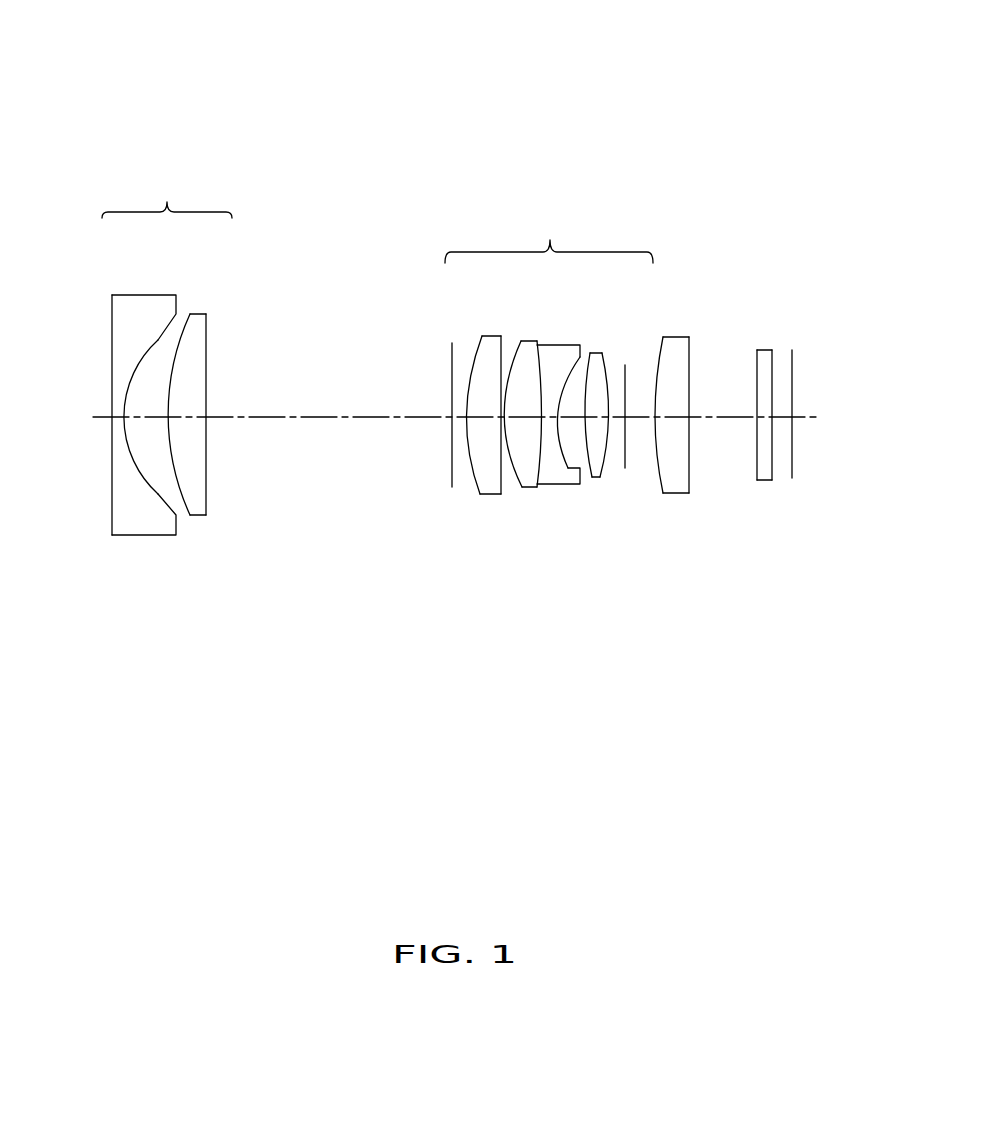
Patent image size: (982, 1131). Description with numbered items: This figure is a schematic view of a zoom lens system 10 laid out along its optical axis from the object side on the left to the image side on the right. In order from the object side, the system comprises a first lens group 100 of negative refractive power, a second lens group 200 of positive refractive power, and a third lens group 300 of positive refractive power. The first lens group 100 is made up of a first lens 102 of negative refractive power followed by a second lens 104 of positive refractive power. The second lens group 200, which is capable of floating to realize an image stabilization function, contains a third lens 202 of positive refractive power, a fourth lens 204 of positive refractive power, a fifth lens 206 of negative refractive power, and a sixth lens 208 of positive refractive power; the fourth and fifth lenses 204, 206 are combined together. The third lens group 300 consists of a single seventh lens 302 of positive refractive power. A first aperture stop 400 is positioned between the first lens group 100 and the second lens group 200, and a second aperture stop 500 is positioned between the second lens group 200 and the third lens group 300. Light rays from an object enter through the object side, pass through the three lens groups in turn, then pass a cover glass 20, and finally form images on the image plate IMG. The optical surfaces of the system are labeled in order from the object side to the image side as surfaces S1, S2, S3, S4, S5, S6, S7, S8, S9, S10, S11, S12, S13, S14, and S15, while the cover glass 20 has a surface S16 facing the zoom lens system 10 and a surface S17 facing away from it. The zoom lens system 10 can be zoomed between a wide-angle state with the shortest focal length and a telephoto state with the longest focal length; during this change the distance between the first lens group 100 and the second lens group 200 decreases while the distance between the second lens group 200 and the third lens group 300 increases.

The zoom lens system 10 is at (452, 68).
The first lens group 100 is at (171, 372).
The first lens 102 is at (140, 305).
The second lens 104 is at (197, 322).
The second lens group 200 is at (549, 383).
The third lens 202 is at (485, 347).
The fourth lens 204 is at (529, 352).
The fifth lens 206 is at (560, 358).
The sixth lens 208 is at (594, 355).
The third lens group 300 is at (703, 394).
The seventh lens 302 is at (678, 347).
The first aperture stop 400 is at (452, 480).
The second aperture stop 500 is at (625, 377).
The cover glass 20 is at (763, 352).
The surface S1 is at (112, 493).
The surface S2 is at (138, 363).
The surface S3 is at (173, 363).
The surface S4 is at (207, 352).
The surface S5 is at (452, 430).
The surface S6 is at (472, 478).
The surface S7 is at (503, 492).
The surface S8 is at (515, 350).
The surface S9 is at (562, 483).
The surface S10 is at (568, 470).
The surface S11 is at (590, 378).
The surface S12 is at (608, 458).
The surface S13 is at (627, 450).
The surface S14 is at (657, 480).
The surface S15 is at (689, 473).
The surface S16 is at (755, 447).
The surface S17 is at (772, 470).
The image plate IMG is at (793, 365).